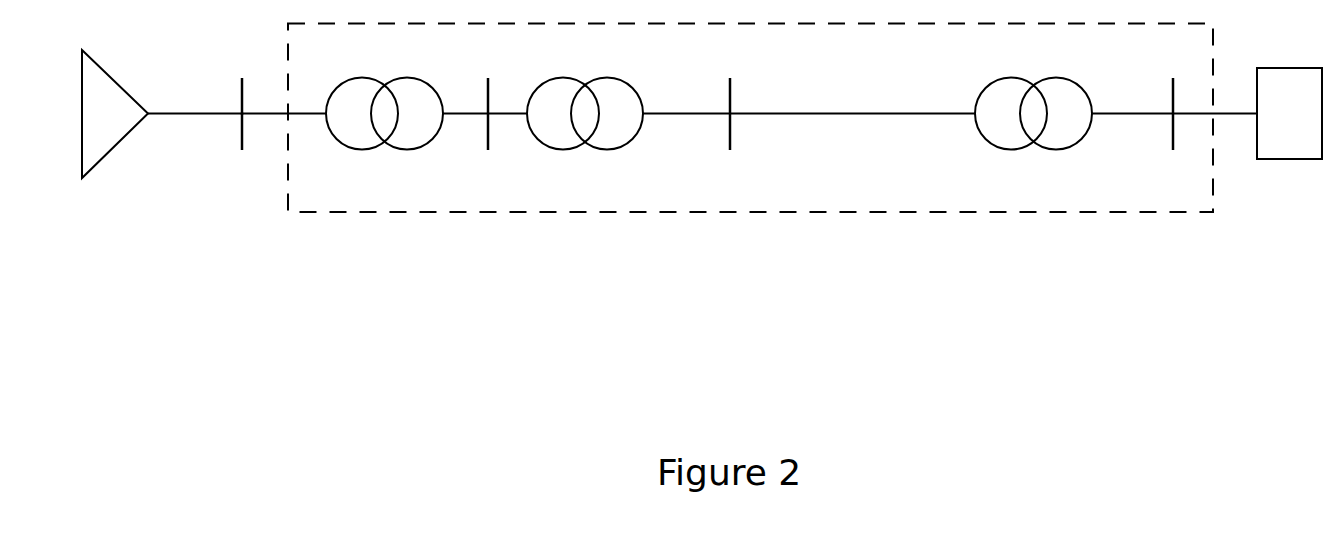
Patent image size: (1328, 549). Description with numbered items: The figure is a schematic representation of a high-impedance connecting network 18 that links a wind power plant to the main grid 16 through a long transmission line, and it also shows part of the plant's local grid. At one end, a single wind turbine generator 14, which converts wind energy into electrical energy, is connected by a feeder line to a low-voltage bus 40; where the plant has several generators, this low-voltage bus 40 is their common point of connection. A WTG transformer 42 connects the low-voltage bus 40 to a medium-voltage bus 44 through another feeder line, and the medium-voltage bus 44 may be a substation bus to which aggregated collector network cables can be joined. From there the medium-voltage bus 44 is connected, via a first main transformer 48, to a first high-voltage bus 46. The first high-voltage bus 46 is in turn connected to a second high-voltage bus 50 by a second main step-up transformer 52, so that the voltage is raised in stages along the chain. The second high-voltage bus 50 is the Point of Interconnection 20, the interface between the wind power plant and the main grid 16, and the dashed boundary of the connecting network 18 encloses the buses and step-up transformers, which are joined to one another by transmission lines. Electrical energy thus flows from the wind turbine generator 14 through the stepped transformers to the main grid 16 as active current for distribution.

The wind turbine generator 14 is at (1295, 148).
The main grid 16 is at (102, 163).
The connecting network 18 is at (655, 212).
The Point of Interconnection 20 is at (242, 114).
The low-voltage bus 40 is at (1173, 137).
The WTG transformer 42 is at (1040, 137).
The medium-voltage bus 44 is at (730, 140).
The first high-voltage bus 46 is at (488, 140).
The first main transformer 48 is at (557, 137).
The second high-voltage bus 50 is at (242, 140).
The second main step-up transformer 52 is at (392, 150).